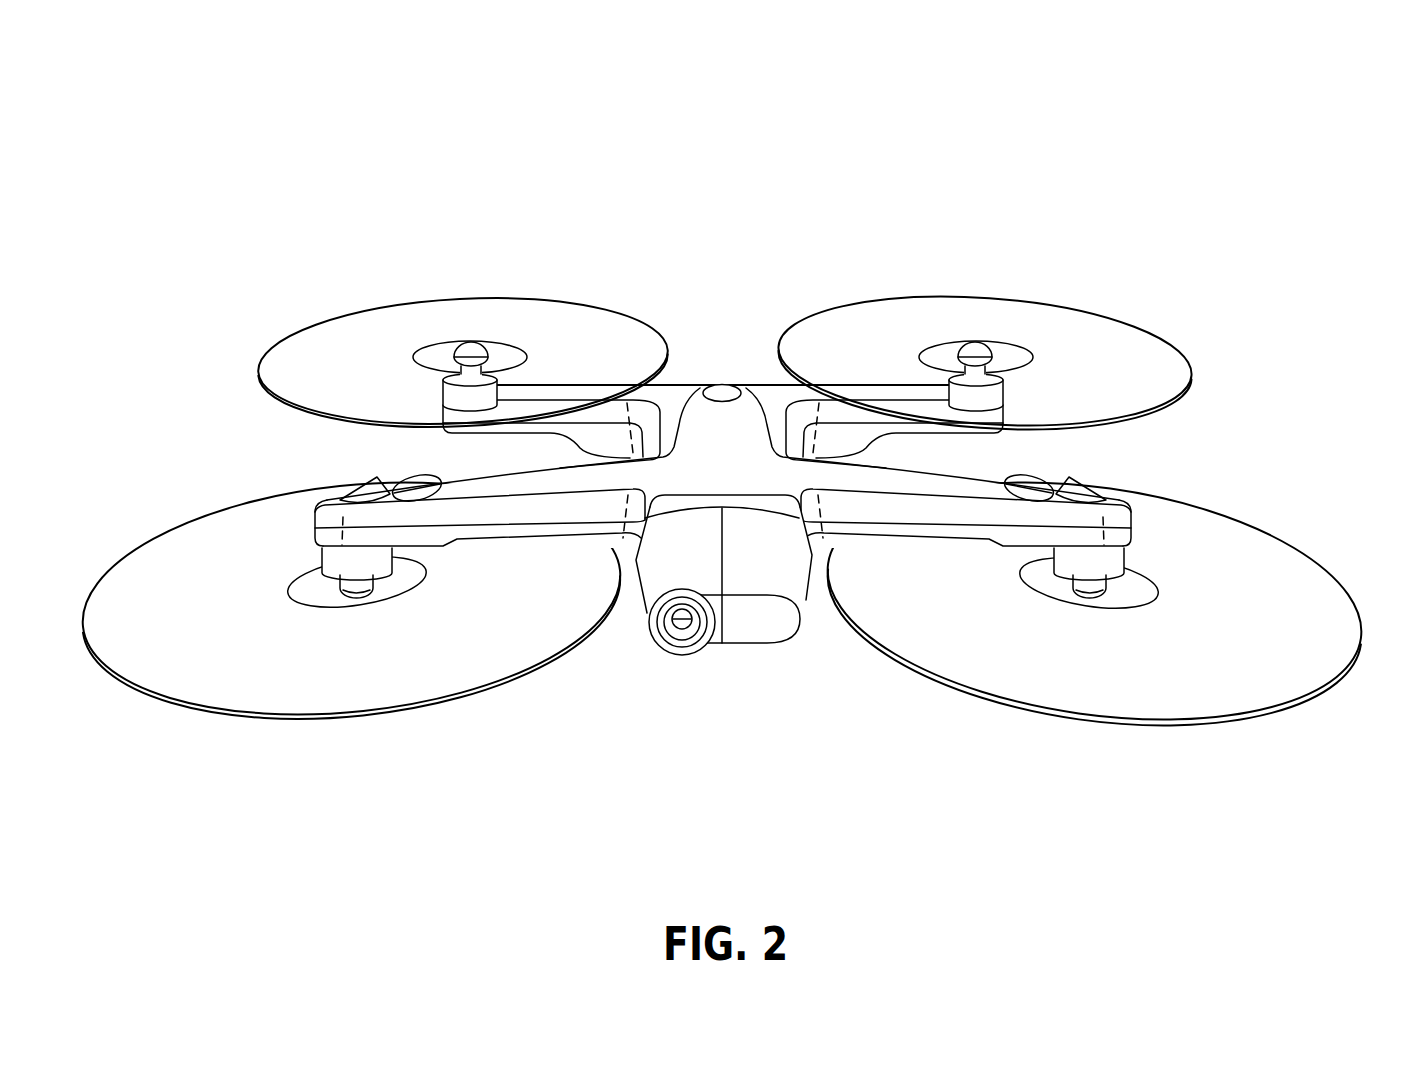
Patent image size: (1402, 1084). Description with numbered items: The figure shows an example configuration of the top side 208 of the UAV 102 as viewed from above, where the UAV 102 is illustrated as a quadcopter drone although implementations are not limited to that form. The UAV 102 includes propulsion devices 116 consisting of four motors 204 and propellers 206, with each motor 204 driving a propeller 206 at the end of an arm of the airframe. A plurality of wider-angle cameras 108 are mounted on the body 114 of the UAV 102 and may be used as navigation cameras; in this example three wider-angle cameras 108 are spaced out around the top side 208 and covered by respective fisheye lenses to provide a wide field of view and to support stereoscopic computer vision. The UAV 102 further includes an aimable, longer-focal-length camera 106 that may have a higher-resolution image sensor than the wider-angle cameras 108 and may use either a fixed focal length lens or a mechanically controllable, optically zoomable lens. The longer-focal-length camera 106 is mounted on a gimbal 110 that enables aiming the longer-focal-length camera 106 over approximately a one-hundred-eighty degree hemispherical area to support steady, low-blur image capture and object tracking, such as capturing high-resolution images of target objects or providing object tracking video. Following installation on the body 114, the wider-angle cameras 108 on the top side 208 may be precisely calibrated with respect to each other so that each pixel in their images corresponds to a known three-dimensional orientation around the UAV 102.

The UAV 102 is at (88, 75).
The longer-focal-length camera 106 is at (690, 650).
The wider-angle cameras 108 is at (720, 383).
The gimbal 110 is at (803, 608).
The body 114 is at (690, 384).
The propulsion devices 116 is at (343, 296).
The motors 204 is at (443, 391).
The propellers 206 is at (297, 333).
The top side 208 is at (814, 266).